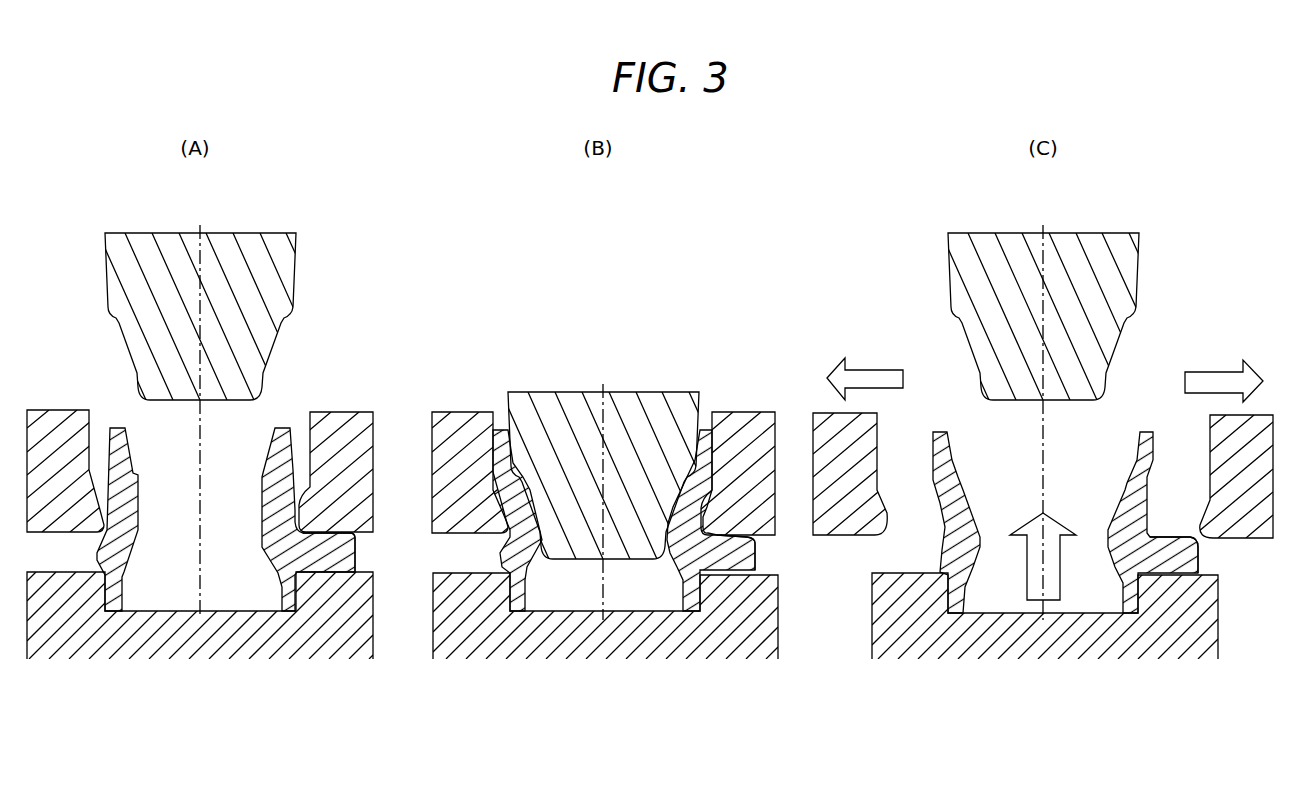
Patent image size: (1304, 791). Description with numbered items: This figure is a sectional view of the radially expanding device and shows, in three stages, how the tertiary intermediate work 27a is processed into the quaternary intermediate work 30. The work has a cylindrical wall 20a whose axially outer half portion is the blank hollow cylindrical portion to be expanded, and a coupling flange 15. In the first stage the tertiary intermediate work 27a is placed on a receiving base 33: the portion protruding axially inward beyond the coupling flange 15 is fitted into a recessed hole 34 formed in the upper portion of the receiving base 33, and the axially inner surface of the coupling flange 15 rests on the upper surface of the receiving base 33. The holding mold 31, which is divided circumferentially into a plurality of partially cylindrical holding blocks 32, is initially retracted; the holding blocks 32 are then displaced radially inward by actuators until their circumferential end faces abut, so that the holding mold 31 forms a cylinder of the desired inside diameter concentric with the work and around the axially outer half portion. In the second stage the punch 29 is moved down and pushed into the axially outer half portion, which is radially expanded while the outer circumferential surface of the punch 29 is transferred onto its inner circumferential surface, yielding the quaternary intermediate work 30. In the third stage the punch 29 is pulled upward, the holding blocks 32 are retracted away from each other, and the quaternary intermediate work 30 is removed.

The punch 29 is at (248, 255).
The holding mold 31 is at (52, 420).
The holding blocks 32 is at (342, 422).
The receiving base 33 is at (68, 618).
The cylindrical wall 20a is at (123, 547).
The tertiary intermediate work 27a is at (290, 600).
The quaternary intermediate work 30 is at (682, 613).
The coupling flange 15 is at (340, 560).
The recessed hole 34 is at (220, 612).